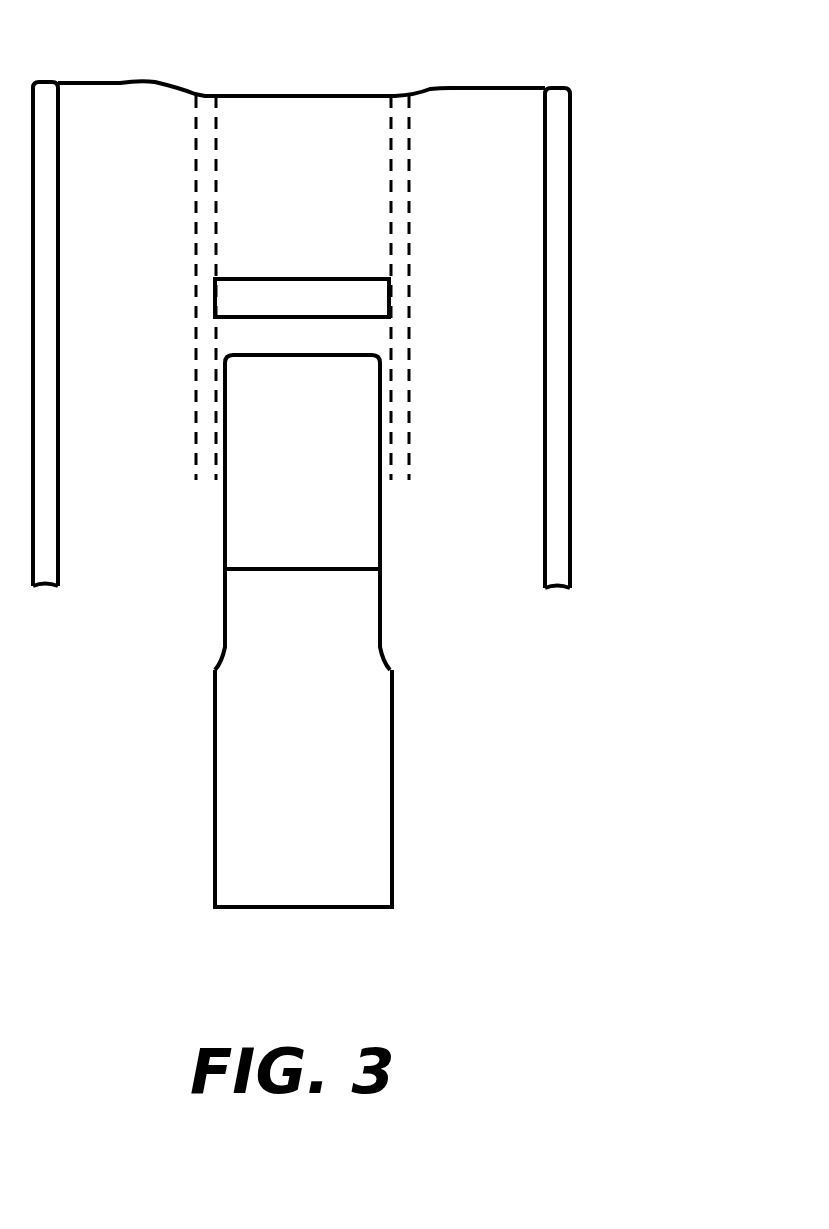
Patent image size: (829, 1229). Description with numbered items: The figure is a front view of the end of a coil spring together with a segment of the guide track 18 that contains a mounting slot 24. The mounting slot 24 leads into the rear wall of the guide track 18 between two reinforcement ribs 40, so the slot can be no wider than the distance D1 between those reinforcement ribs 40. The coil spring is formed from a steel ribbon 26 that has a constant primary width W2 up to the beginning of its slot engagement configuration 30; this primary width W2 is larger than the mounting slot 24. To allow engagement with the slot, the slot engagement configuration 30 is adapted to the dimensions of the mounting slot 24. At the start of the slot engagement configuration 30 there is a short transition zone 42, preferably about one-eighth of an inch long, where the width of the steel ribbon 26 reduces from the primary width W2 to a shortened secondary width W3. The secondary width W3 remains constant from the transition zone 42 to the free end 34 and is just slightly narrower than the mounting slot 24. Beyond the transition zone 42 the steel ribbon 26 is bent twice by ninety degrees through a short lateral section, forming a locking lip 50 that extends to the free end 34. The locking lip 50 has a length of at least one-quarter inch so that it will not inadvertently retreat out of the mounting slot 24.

The guide track 18 is at (458, 125).
The reinforcement ribs 40 is at (208, 128).
The distance between the reinforcement ribs D1 is at (391, 192).
The mounting slot 24 is at (380, 300).
The free end 34 is at (287, 353).
The locking lip 50 is at (350, 517).
The slot engagement configuration 30 is at (178, 365).
The secondary width W3 is at (408, 592).
The transition zone 42 is at (387, 633).
The steel ribbon 26 is at (245, 728).
The primary width W2 is at (162, 833).